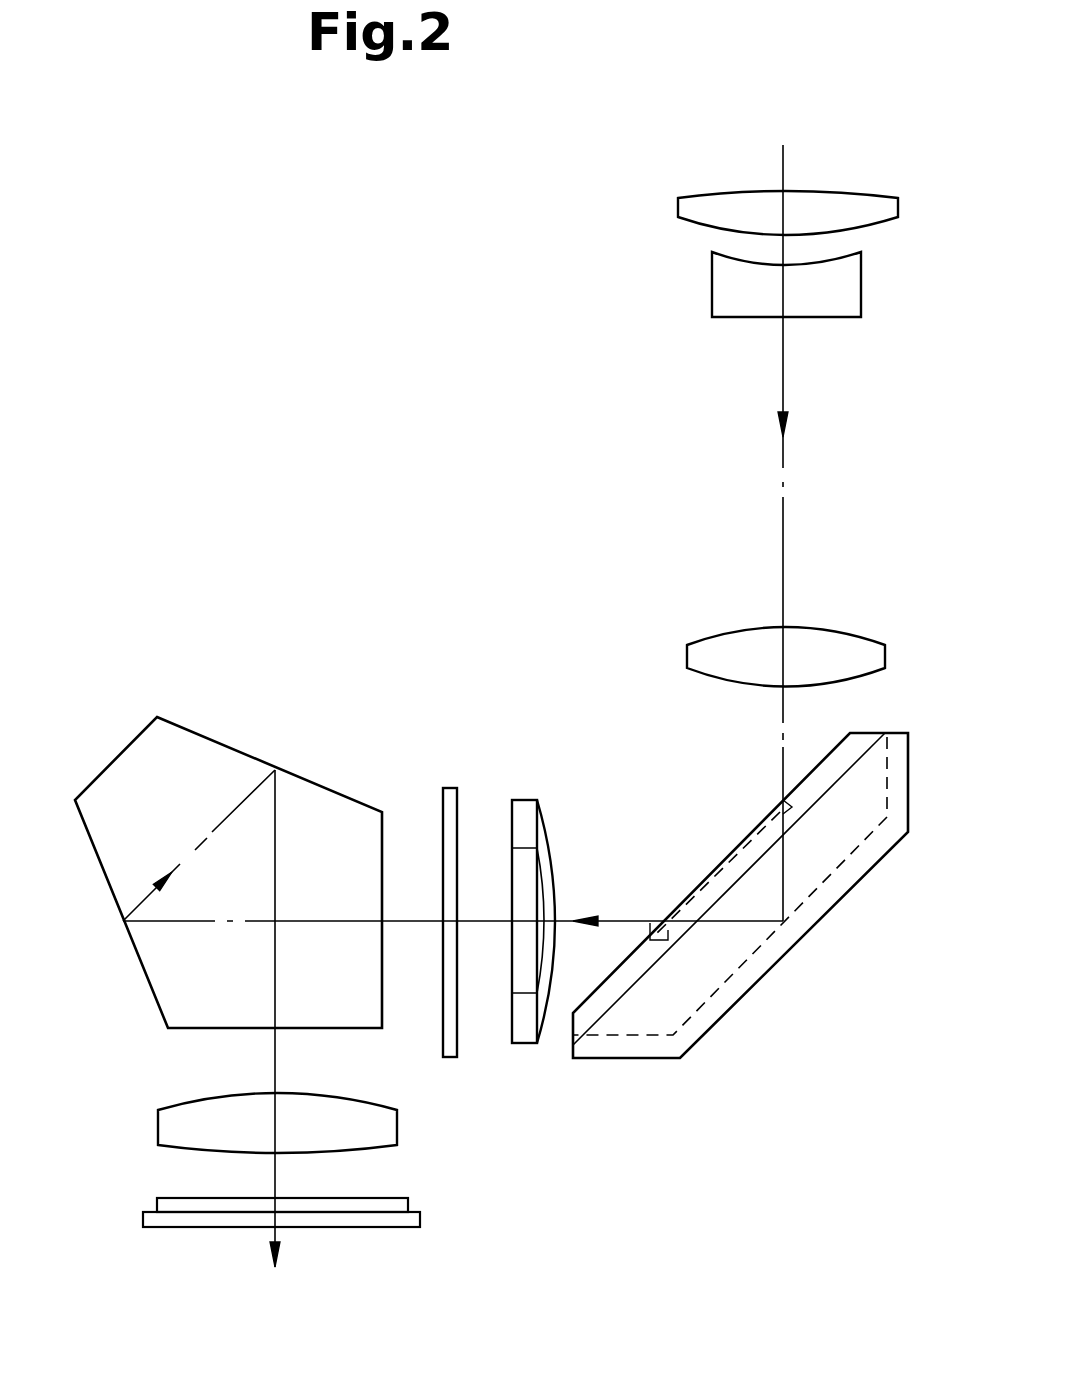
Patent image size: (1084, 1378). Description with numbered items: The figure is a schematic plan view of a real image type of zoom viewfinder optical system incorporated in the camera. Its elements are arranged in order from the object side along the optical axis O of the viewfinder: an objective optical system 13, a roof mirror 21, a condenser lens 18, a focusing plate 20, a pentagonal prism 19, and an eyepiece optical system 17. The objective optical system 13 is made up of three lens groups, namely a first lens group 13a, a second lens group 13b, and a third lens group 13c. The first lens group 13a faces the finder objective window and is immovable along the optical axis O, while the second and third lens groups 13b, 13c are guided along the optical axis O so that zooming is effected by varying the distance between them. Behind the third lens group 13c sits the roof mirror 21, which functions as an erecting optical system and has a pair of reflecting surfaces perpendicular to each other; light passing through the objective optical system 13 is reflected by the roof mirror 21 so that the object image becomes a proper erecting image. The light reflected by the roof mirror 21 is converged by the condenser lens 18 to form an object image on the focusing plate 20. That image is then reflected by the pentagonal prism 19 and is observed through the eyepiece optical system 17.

The objective optical system 13 is at (655, 655).
The first lens group 13a is at (838, 203).
The second lens group 13b is at (828, 305).
The third lens group 13c is at (843, 647).
The optical axis O is at (785, 515).
The eyepiece optical system 17 is at (435, 1240).
The condenser lens 18 is at (525, 802).
The pentagonal prism 19 is at (328, 800).
The focusing plate 20 is at (443, 818).
The roof mirror 21 is at (745, 992).